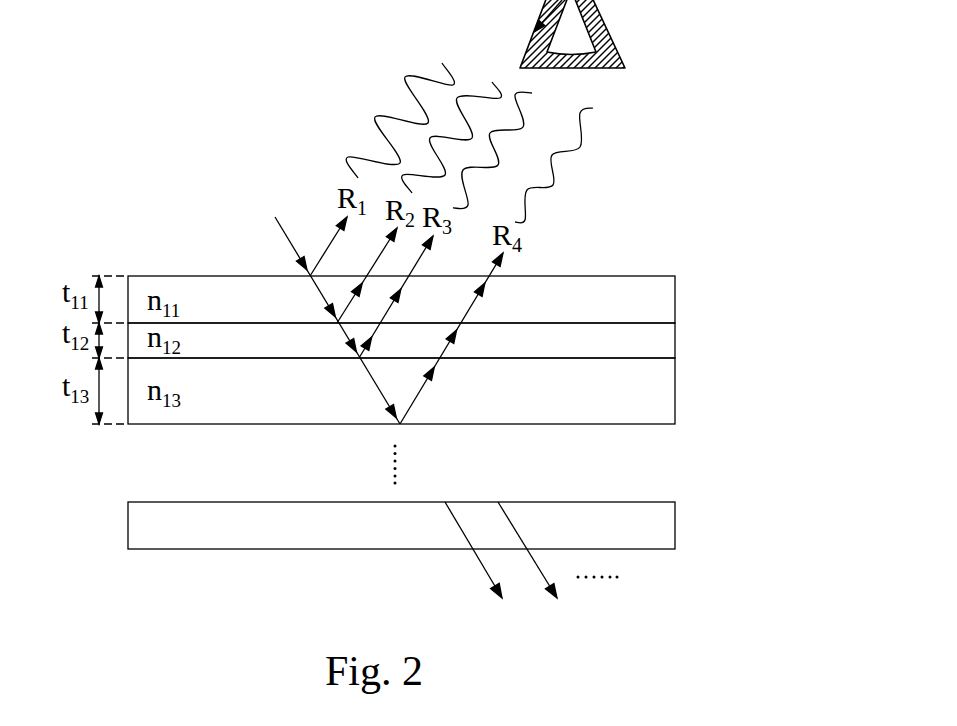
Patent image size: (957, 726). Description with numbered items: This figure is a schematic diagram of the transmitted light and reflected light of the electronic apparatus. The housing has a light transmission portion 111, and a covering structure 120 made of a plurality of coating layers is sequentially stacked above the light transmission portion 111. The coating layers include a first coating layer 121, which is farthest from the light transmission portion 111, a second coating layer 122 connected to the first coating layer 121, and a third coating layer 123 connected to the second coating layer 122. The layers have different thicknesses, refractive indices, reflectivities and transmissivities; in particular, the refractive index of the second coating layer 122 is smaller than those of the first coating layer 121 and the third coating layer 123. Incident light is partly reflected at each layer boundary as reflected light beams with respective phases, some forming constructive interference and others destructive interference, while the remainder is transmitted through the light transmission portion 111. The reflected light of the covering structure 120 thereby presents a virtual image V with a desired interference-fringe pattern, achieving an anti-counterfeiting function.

The light transmission portion 111 is at (663, 527).
The covering structure 120 is at (468, 388).
The first coating layer 121 is at (663, 303).
The second coating layer 122 is at (663, 344).
The third coating layer 123 is at (663, 396).
The virtual image V is at (607, 33).